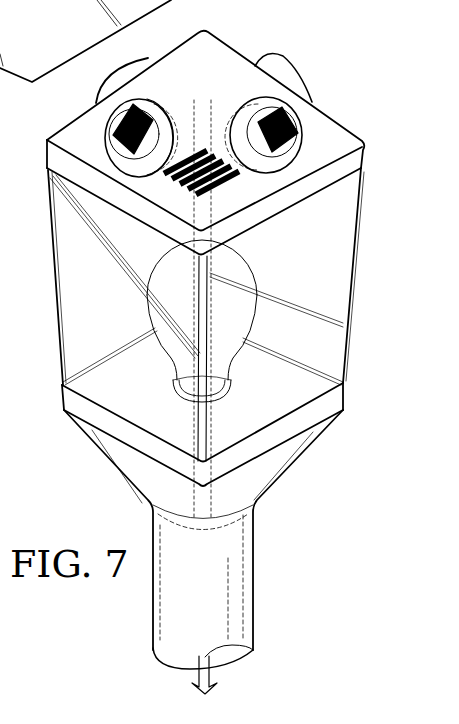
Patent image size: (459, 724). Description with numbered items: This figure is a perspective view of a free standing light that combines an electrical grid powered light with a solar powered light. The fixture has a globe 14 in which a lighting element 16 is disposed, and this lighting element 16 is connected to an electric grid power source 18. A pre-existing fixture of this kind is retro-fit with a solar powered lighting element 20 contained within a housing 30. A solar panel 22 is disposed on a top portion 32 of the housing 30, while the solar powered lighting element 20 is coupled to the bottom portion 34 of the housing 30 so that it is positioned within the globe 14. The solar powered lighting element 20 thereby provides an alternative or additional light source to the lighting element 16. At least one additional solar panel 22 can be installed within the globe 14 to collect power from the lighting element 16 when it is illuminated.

The globe 14 is at (88, 333).
The lighting element 16 is at (146, 284).
The electric grid power source 18 is at (199, 678).
The solar powered lighting element 20 is at (145, 172).
The solar panel 22 is at (116, 113).
The housing 30 is at (313, 135).
The top portion 32 is at (241, 165).
The bottom portion 34 is at (206, 147).